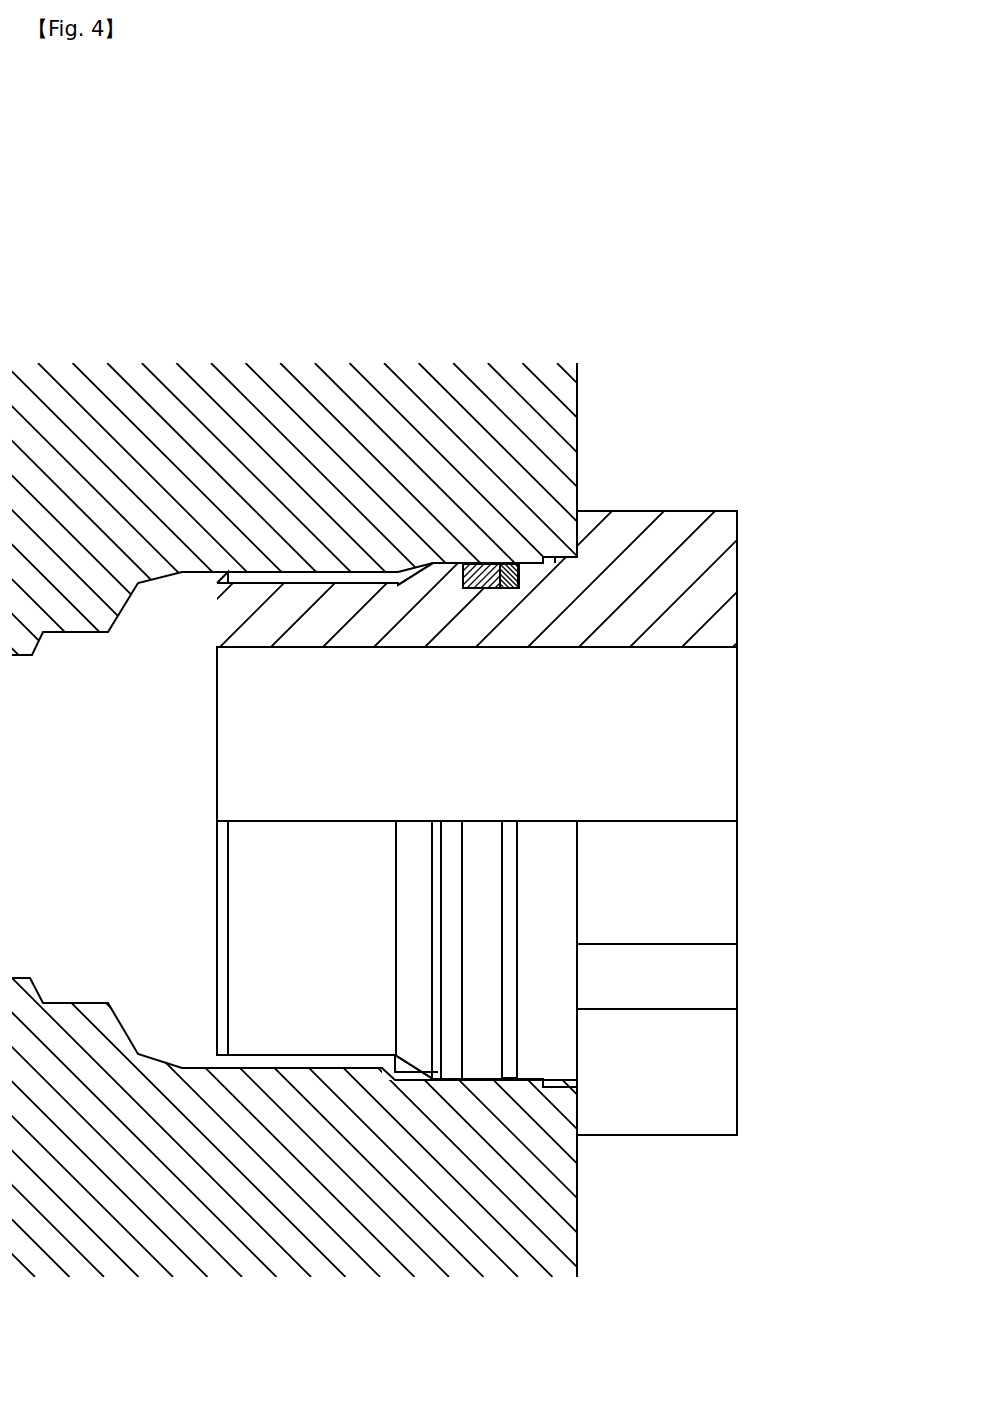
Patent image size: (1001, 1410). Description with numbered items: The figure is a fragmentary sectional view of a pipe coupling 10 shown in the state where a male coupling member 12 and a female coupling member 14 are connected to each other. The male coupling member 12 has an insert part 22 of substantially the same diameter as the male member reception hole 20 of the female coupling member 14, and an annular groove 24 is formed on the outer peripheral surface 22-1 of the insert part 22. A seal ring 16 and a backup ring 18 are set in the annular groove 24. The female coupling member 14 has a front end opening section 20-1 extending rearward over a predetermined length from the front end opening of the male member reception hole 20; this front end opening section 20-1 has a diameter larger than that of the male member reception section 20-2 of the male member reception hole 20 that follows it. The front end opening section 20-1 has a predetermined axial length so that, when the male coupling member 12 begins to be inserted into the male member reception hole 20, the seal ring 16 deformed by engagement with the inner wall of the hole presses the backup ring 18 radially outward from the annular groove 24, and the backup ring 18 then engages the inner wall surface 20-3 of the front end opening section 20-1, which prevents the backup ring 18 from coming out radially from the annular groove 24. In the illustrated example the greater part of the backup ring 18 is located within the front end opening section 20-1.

The pipe coupling 10 is at (590, 158).
The male coupling member 12 is at (733, 450).
The female coupling member 14 is at (471, 272).
The seal ring 16 is at (490, 563).
The backup ring 18 is at (515, 562).
The male member reception hole 20 is at (297, 583).
The front end opening section 20-1 is at (560, 560).
The male member reception section 20-2 is at (433, 563).
The inner wall surface 20-3 is at (560, 567).
The insert part 22 is at (318, 980).
The outer peripheral surface 22-1 is at (452, 1080).
The annular groove 24 is at (510, 1033).